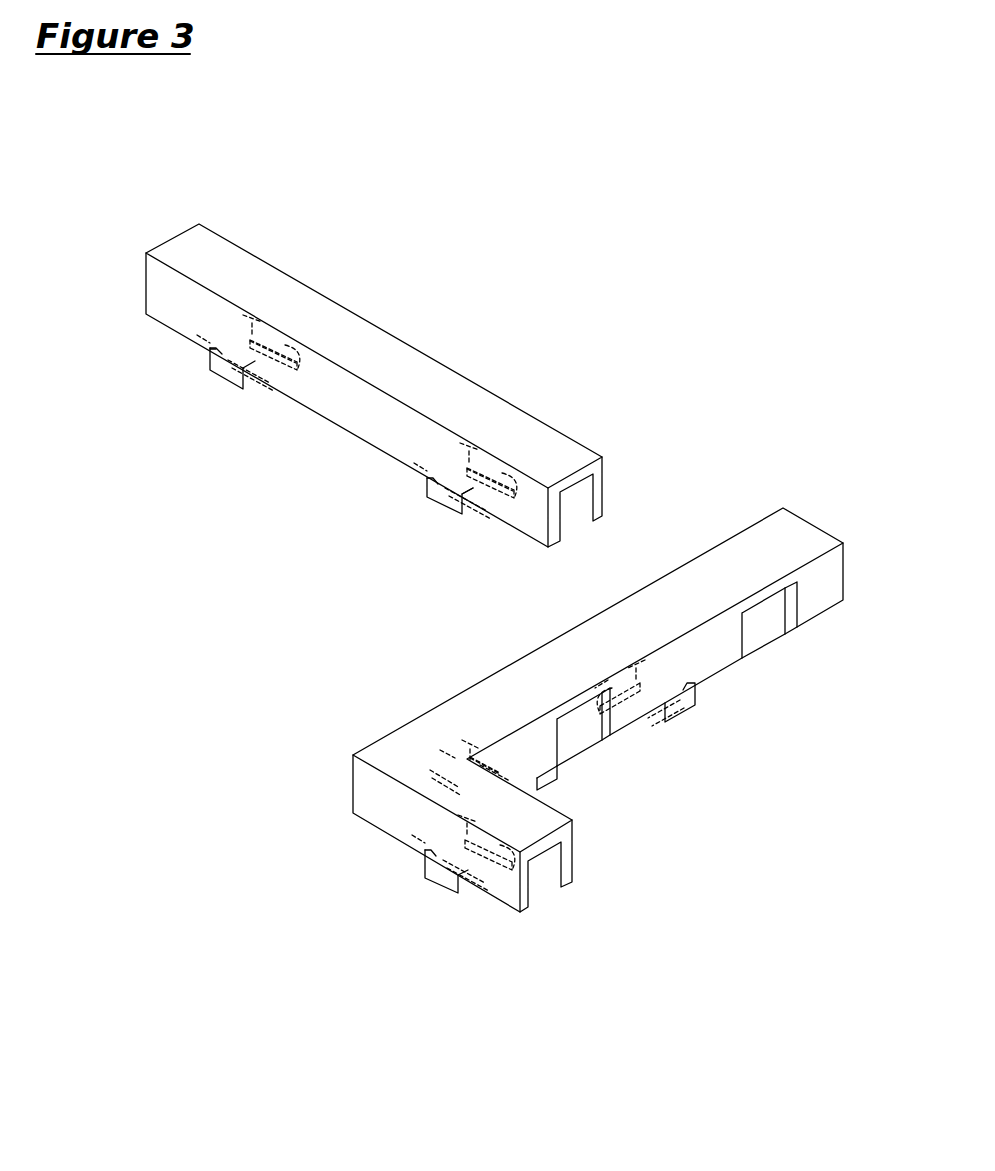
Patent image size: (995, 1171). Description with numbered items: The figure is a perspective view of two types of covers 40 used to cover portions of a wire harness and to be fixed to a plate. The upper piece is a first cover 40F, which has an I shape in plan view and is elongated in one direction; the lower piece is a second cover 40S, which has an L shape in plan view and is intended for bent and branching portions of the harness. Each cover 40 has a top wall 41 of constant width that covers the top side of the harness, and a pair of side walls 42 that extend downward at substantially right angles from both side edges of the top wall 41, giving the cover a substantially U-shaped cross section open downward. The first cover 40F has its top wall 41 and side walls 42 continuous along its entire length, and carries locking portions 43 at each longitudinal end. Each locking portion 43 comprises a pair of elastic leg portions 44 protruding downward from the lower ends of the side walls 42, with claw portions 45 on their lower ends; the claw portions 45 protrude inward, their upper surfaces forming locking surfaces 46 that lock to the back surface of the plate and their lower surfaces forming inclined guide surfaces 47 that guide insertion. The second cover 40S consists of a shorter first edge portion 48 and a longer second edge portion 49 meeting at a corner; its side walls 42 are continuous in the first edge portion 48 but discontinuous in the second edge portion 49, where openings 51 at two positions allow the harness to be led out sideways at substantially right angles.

The cover 40 is at (512, 117).
The first cover 40F is at (368, 322).
The second cover 40S is at (776, 523).
The top wall 41 is at (445, 368).
The side wall 42 is at (533, 512).
The locking portion 43 is at (233, 375).
The elastic leg portion 44 is at (210, 351).
The claw portion 45 is at (255, 376).
The locking surface 46 is at (470, 488).
The guide surface 47 is at (470, 500).
The first edge portion 48 is at (487, 818).
The second edge portion 49 is at (685, 607).
The opening 51 is at (603, 712).